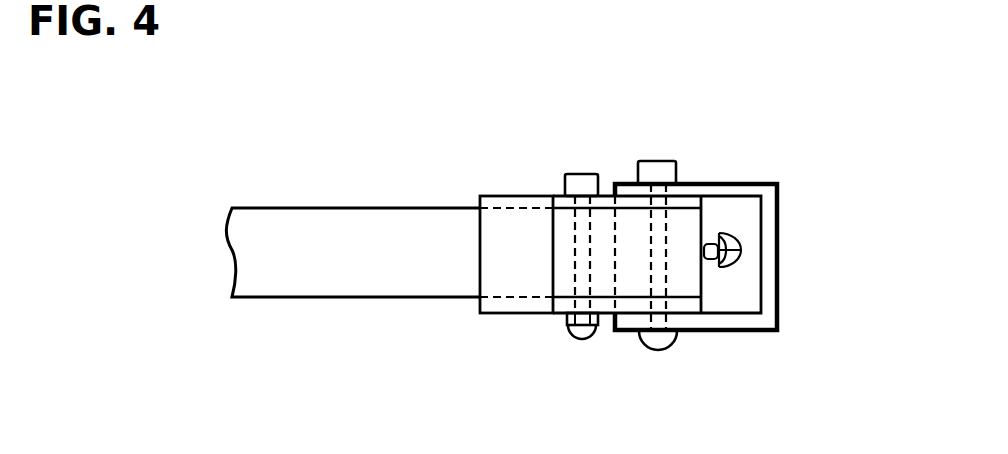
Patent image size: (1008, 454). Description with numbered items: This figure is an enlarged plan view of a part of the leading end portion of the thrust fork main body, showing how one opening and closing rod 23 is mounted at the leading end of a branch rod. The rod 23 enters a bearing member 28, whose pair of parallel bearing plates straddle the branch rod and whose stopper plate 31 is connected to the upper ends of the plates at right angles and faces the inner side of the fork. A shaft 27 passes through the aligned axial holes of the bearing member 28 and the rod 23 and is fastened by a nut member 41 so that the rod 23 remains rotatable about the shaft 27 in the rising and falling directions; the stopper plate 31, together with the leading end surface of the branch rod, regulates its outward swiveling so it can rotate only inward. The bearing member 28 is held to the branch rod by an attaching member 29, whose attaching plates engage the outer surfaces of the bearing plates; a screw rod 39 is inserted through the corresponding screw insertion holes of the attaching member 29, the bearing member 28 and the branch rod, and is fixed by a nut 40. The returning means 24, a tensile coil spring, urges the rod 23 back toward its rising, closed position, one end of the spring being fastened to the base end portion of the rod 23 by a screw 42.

The opening and closing rod 23 is at (268, 207).
The stopper plate 31 is at (500, 222).
The shaft 27 is at (573, 186).
The nut 40 is at (661, 162).
The attaching member 29 is at (750, 179).
The returning means 24 is at (746, 241).
The screw 42 is at (735, 265).
The bearing member 28 is at (498, 265).
The nut member 41 is at (568, 328).
The screw rod 39 is at (657, 340).